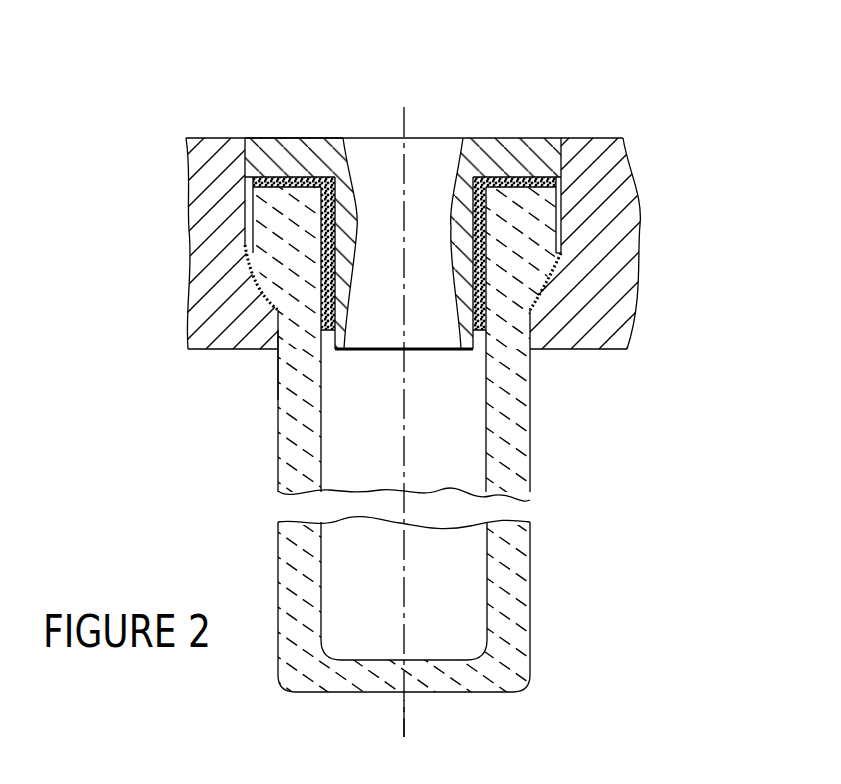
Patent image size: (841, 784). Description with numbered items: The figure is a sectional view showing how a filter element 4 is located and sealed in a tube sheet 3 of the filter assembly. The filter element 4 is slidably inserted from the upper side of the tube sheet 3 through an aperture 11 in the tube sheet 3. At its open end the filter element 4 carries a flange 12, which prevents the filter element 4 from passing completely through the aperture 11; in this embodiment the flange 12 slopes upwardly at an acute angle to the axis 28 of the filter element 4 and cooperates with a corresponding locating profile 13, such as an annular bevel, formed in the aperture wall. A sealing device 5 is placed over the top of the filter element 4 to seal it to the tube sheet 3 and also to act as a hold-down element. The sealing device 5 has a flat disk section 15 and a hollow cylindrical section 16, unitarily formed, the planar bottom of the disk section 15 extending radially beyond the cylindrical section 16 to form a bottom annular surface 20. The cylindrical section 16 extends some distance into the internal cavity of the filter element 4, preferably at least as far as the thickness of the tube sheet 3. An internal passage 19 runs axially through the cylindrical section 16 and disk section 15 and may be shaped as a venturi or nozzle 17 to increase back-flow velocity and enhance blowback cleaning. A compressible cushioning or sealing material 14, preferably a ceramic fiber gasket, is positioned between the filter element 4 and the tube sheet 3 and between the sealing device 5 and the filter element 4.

The tube sheet 3 is at (636, 165).
The filter element 4 is at (530, 460).
The sealing device 5 is at (318, 138).
The aperture 11 is at (276, 356).
The flange 12 is at (533, 300).
The locating profile 13 is at (537, 262).
The compressible material 14 is at (257, 272).
The disk section 15 is at (292, 134).
The hollow cylindrical section 16 is at (490, 218).
The nozzle 17 is at (457, 297).
The internal passage 19 is at (418, 150).
The bottom annular surface 20 is at (553, 183).
The axis 28 is at (403, 720).